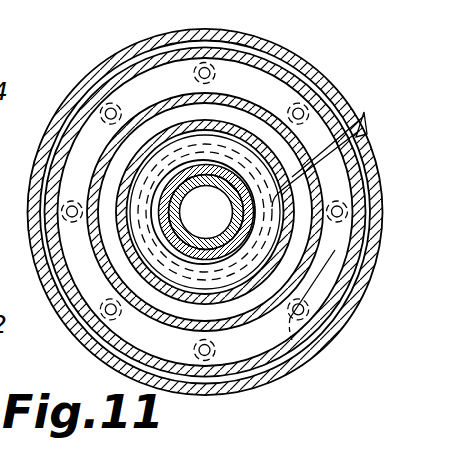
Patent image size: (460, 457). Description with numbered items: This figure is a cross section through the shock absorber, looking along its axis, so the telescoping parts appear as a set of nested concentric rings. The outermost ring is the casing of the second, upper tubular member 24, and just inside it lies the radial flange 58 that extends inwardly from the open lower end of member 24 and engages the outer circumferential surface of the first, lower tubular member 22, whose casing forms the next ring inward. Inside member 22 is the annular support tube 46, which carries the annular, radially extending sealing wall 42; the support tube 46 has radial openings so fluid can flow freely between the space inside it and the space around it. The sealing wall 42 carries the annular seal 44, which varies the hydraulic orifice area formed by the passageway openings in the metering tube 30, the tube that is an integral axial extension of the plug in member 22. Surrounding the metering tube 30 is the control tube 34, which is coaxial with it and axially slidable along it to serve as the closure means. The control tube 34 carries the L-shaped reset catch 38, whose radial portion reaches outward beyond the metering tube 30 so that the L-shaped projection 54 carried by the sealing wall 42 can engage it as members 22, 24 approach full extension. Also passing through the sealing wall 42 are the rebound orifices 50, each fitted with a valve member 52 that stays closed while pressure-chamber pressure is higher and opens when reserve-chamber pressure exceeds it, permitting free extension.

The first tubular member 22 is at (318, 102).
The second tubular member 24 is at (270, 44).
The metering tube 30 is at (147, 187).
The control tube 34 is at (150, 180).
The reset catch 38 is at (185, 208).
The sealing wall 42 is at (333, 147).
The annular seal 44 is at (155, 225).
The support tube 46 is at (352, 306).
The rebound orifices 50 is at (302, 318).
The valve member 52 is at (302, 358).
The projection 54 is at (238, 324).
The radial flange 58 is at (293, 72).